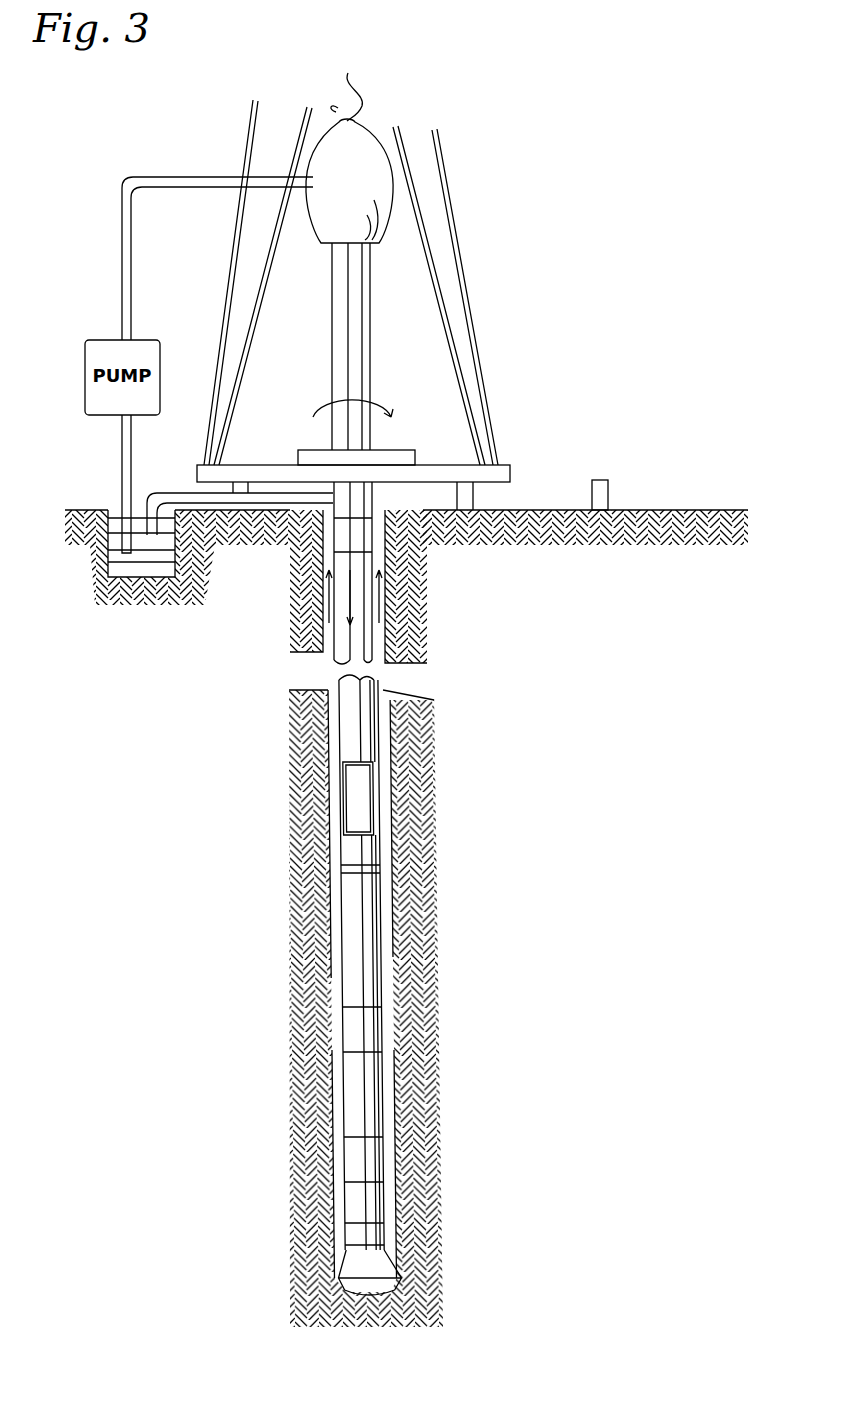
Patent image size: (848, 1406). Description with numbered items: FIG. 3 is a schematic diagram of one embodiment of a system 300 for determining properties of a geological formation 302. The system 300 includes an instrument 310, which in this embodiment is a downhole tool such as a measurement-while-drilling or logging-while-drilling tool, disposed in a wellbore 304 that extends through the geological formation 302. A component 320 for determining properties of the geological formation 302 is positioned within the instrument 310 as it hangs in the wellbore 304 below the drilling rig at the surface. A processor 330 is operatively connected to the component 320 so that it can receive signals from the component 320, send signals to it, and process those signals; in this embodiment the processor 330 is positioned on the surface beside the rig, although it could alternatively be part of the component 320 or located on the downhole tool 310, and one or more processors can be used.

The system 300 is at (322, 893).
The geological formation 302 is at (413, 720).
The wellbore 304 is at (392, 1203).
The instrument 310 is at (380, 748).
The component 320 is at (377, 798).
The processor 330 is at (600, 479).